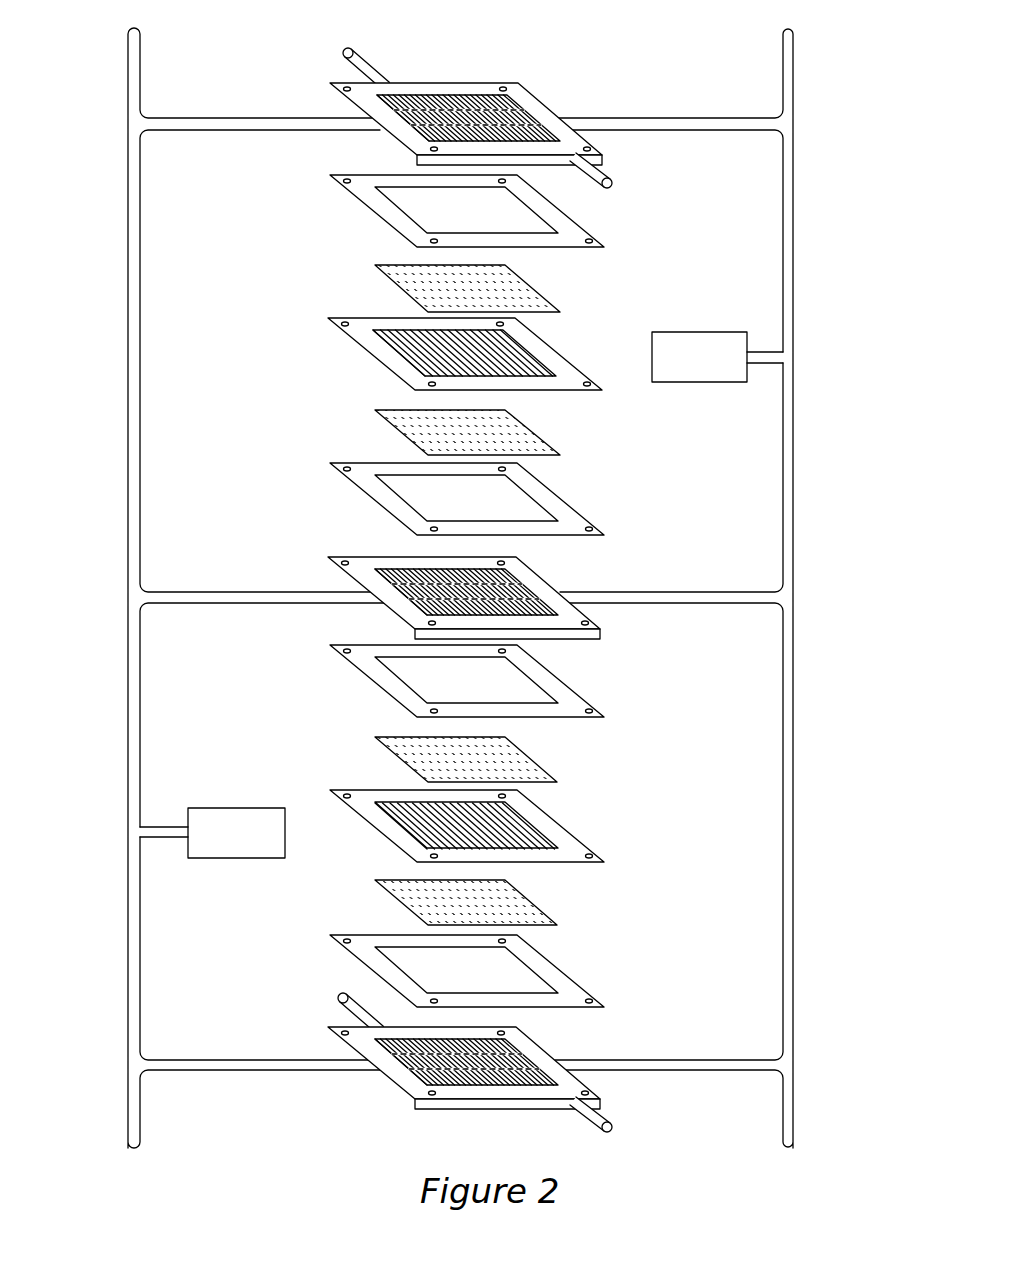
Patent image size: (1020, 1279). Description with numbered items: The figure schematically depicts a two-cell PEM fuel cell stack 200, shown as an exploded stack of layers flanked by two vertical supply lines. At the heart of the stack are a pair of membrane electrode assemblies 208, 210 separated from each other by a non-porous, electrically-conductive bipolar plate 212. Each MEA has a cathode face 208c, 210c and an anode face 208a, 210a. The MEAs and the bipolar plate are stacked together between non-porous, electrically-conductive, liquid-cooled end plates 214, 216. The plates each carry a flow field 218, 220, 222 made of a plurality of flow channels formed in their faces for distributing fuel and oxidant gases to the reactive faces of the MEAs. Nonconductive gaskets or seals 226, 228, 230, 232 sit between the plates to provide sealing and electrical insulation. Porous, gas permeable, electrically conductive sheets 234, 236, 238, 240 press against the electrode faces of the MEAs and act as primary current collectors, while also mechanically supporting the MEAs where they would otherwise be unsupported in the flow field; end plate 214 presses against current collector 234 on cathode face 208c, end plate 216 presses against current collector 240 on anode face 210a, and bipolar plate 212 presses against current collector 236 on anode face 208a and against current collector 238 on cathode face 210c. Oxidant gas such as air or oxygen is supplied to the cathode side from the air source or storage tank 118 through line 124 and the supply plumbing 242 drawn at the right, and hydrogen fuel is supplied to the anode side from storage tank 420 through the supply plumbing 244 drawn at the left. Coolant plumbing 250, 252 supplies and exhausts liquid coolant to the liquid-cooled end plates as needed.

The PEM fuel cell stack 200 is at (483, 588).
The end plate 214 is at (333, 98).
The flow field 218 is at (372, 128).
The coolant plumbing 250 is at (362, 63).
The coolant plumbing 252 is at (604, 175).
The gasket 226 is at (393, 215).
The primary current collector 234 is at (398, 272).
The membrane electrode assembly 208 is at (430, 358).
The cathode face 208c is at (523, 353).
The anode face 208a is at (527, 380).
The primary current collector 236 is at (405, 420).
The gasket 228 is at (368, 478).
The bipolar plate 212 is at (401, 575).
The flow field 220 is at (510, 578).
The gasket 230 is at (567, 700).
The primary current collector 238 is at (523, 762).
The membrane electrode assembly 210 is at (507, 799).
The cathode face 210c is at (402, 802).
The anode face 210a is at (400, 838).
The primary current collector 240 is at (531, 903).
The gasket 232 is at (556, 972).
The end plate 216 is at (495, 1081).
The flow field 222 is at (425, 1078).
The supply plumbing 244 is at (128, 946).
The supply plumbing 242 is at (794, 484).
The air source/storage tank 118 is at (676, 333).
The line 124 is at (767, 364).
The storage tank 420 is at (268, 808).